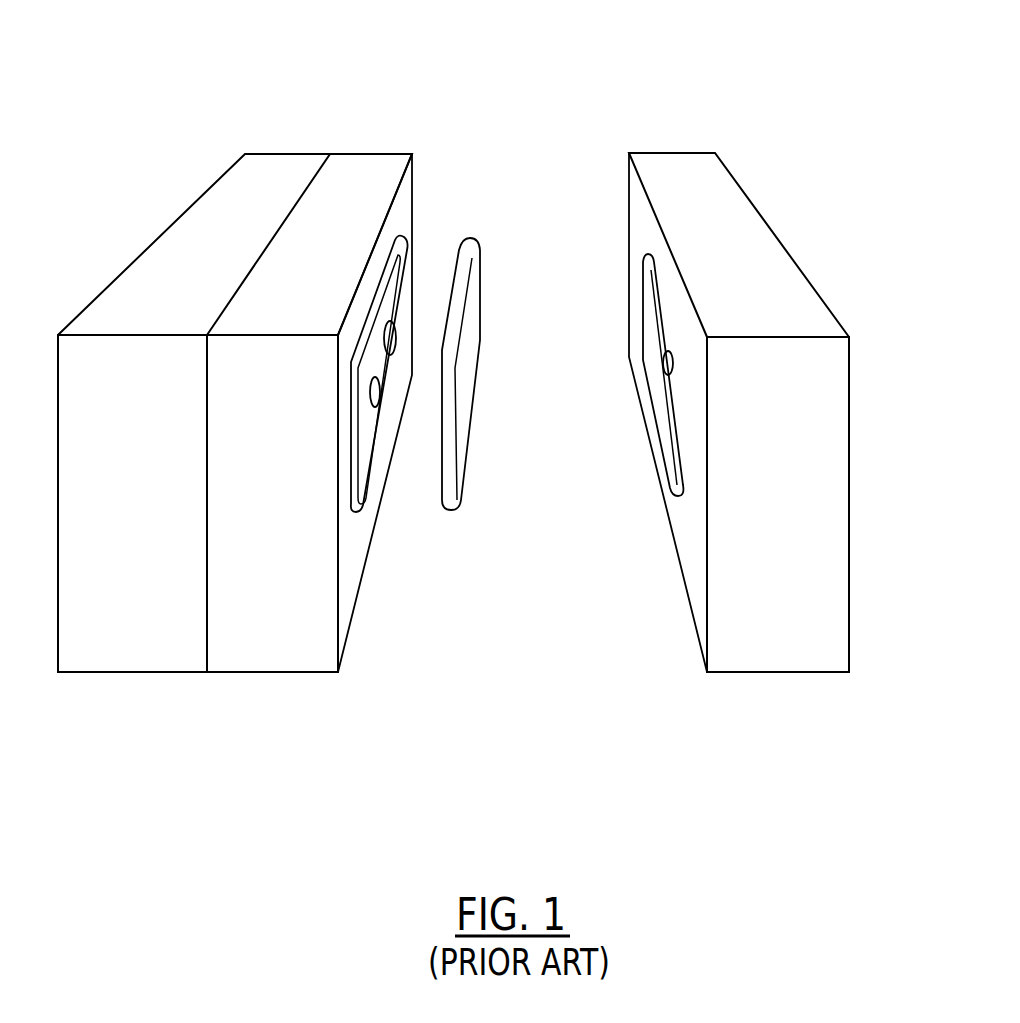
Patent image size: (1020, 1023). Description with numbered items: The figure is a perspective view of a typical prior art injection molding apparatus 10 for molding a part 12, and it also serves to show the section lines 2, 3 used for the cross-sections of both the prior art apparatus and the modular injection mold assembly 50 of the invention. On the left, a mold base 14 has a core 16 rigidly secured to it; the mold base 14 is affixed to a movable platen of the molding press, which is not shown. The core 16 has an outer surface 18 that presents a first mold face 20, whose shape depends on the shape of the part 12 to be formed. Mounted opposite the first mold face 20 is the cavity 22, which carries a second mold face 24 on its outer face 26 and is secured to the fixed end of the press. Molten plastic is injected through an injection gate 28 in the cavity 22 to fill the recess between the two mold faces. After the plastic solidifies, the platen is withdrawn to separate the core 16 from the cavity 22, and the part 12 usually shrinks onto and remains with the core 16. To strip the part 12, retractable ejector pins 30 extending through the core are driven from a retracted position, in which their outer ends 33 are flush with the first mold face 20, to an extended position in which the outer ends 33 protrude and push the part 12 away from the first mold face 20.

The injection molding apparatus 10 is at (478, 736).
The modular injection mold assembly 50 is at (117, 712).
The part 12 is at (465, 392).
The mold base 14 is at (278, 165).
The core 16 is at (328, 381).
The outer surface 18 is at (358, 578).
The first mold face 20 is at (373, 443).
The cavity 22 is at (753, 218).
The second mold face 24 is at (650, 286).
The outer face 26 is at (685, 553).
The injection gate 28 is at (662, 366).
The ejector pins 30 is at (370, 349).
The outer ends 33 is at (396, 330).
The section line 2— 2 is at (488, 423).
The section line for FIG. 3 is at (467, 0).